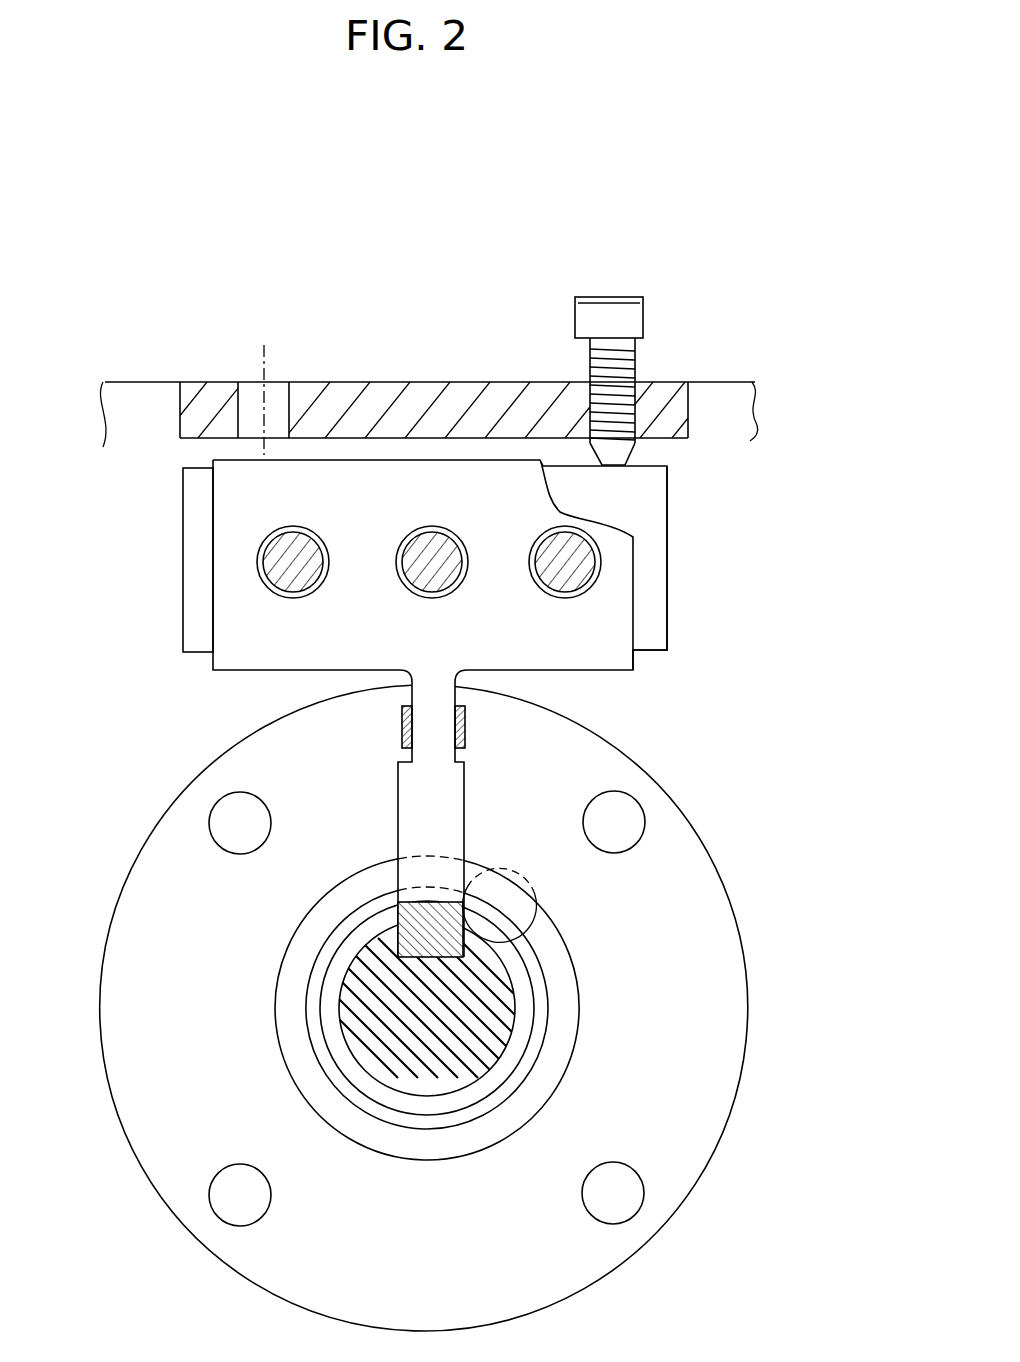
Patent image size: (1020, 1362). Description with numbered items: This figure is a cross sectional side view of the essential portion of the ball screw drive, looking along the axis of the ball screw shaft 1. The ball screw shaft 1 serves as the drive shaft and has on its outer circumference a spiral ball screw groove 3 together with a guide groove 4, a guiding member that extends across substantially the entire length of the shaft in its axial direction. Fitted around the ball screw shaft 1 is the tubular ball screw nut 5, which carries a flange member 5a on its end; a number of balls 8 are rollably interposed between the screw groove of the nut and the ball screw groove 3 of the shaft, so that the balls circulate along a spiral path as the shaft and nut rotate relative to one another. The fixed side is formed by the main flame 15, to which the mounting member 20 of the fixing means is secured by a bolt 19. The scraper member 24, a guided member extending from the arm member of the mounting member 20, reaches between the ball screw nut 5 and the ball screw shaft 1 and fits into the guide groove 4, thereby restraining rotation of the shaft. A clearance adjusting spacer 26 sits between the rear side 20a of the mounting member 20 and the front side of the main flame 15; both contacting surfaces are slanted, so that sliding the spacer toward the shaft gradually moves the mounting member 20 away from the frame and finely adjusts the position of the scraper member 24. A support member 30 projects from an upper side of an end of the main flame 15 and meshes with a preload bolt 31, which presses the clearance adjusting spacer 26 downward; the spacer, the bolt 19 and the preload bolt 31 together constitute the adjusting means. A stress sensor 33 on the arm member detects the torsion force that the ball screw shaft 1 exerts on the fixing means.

The ball screw shaft 1 is at (450, 1070).
The ball screw groove 3 is at (545, 1005).
The guide groove 4 is at (400, 955).
The ball screw nut 5 is at (686, 818).
The flange member 5a is at (705, 908).
The balls 8 is at (506, 880).
The main flame 15 is at (727, 422).
The bolt 19 is at (570, 573).
The mounting member 20 is at (622, 568).
The rear side 20a is at (285, 565).
The scraper member 24 is at (404, 942).
The clearance adjusting spacer 26 is at (668, 560).
The support member 30 is at (430, 392).
The preload bolt 31 is at (615, 310).
The stress sensor 33 is at (403, 733).